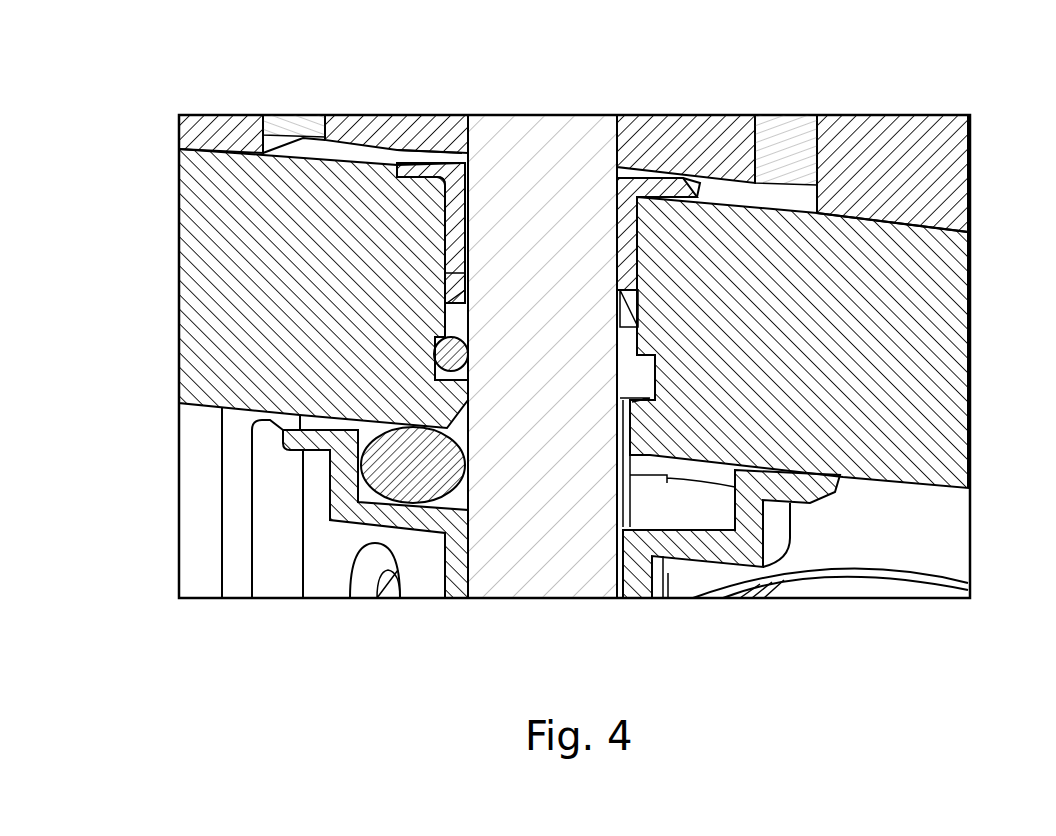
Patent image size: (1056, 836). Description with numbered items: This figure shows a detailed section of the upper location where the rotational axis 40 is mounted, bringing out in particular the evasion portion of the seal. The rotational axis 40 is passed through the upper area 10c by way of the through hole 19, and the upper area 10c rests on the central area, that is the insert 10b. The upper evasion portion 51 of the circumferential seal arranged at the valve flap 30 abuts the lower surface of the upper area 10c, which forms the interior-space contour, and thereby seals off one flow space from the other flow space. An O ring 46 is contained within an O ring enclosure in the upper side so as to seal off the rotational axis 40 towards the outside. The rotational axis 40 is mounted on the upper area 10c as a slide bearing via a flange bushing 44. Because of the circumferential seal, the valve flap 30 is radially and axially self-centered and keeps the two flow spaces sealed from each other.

The rotational axis 40 is at (516, 137).
The flange bushing 44 is at (460, 200).
The O ring 46 is at (457, 348).
The upper evasion portion 51 is at (412, 462).
The valve flap 30 is at (275, 572).
The through hole 19 is at (620, 334).
The upper area 10c is at (927, 322).
The insert 10b is at (927, 532).